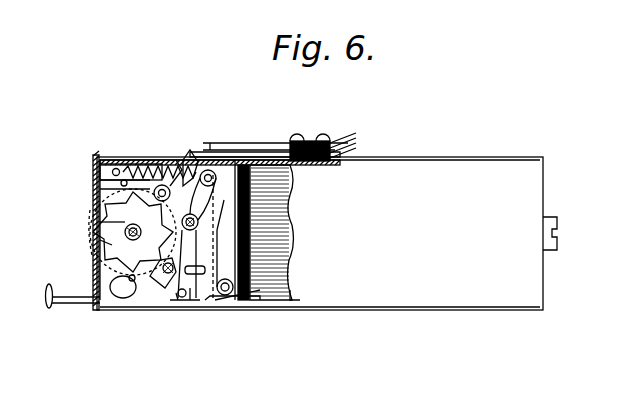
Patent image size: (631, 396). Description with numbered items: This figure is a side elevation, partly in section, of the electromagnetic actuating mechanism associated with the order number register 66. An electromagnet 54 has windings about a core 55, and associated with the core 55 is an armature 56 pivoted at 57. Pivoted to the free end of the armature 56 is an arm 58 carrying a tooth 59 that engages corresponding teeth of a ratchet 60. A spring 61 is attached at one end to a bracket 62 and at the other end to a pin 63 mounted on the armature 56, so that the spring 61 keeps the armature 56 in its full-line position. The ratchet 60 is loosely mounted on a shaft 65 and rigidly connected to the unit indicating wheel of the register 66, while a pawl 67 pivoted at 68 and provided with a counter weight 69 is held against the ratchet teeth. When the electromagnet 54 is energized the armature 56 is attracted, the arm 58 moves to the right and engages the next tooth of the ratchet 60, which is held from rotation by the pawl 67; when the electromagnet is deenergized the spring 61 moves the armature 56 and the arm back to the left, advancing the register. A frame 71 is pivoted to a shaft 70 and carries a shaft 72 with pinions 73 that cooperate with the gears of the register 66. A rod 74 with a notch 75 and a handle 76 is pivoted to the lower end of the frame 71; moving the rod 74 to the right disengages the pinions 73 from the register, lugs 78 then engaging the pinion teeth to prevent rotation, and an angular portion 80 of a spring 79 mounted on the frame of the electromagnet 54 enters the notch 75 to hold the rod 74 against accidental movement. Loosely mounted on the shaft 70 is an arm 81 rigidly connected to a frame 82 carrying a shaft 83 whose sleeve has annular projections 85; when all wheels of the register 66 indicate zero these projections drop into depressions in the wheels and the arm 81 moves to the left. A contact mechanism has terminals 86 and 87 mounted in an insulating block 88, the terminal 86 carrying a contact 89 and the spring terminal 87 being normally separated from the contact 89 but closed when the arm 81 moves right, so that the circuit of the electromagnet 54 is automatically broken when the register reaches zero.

The electromagnet 54 is at (290, 292).
The core 55 is at (252, 218).
The armature 56 is at (226, 296).
The pivot 57 is at (245, 300).
The arm 58 is at (172, 168).
The tooth 59 is at (100, 222).
The ratchet 60 is at (125, 232).
The spring 61 is at (155, 187).
The bracket 62 is at (95, 166).
The pin 63 is at (200, 155).
The shaft 65 is at (100, 242).
The register 66 is at (93, 224).
The pawl 67 is at (165, 275).
The pivot 68 is at (130, 282).
The counter weight 69 is at (118, 292).
The shaft 70 is at (212, 188).
The frame 71 is at (195, 300).
The shaft 72 is at (180, 296).
The pinions 73 is at (176, 292).
The rod 74 is at (72, 300).
The notch 75 is at (160, 285).
The handle 76 is at (45, 298).
The lugs 78 is at (213, 302).
The spring 79 is at (230, 300).
The angular portion 80 is at (194, 276).
The arm 81 is at (181, 152).
The frame 82 is at (148, 160).
The shaft 83 is at (133, 160).
The annular projections 85 is at (94, 160).
The terminal 86 is at (288, 141).
The terminal 87 is at (190, 153).
The insulating block 88 is at (355, 139).
The contact 89 is at (210, 148).